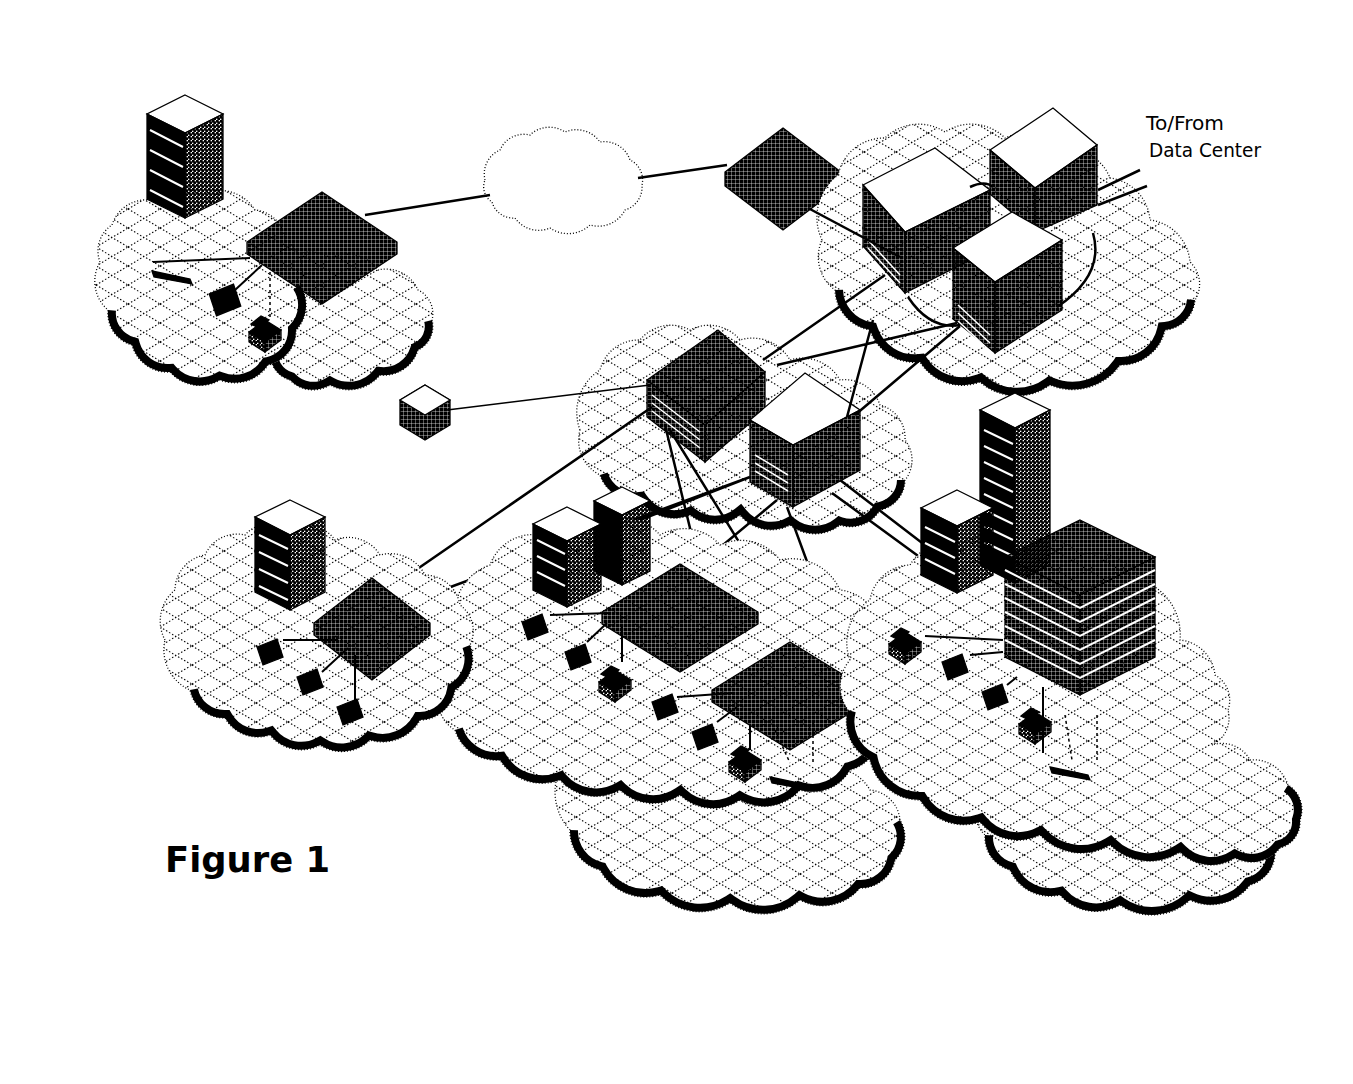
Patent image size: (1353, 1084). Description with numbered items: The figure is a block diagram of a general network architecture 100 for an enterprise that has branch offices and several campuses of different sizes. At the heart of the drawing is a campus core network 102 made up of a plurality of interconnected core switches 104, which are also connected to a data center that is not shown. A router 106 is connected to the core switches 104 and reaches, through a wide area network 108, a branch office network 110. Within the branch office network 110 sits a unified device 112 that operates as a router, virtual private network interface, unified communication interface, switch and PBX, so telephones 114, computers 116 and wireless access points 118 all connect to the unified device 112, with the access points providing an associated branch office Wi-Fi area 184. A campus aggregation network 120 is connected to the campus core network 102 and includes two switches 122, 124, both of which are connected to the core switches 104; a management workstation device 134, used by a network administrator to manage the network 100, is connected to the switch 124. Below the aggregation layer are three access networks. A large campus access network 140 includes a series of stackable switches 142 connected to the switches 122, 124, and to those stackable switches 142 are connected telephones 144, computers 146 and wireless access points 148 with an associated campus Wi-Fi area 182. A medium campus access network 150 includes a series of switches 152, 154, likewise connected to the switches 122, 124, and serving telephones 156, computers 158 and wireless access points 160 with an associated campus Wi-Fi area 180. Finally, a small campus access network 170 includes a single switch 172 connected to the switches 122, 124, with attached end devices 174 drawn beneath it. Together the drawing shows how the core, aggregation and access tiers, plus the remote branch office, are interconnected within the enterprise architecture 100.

The network architecture 100 is at (1238, 487).
The campus core network 102 is at (1170, 320).
The core switches 104 is at (915, 135).
The router 106 is at (768, 140).
The wide area network (WAN) 108 is at (540, 140).
The branch office network 110 is at (232, 240).
The unified device 112 is at (330, 198).
The telephones 114 is at (274, 344).
The computers 116 is at (216, 323).
The wireless access points 118 is at (160, 288).
The campus aggregation network 120 is at (905, 495).
The switch 122 is at (850, 462).
The switch 124 is at (735, 346).
The management workstation device 134 is at (337, 412).
The large campus access network 140 is at (1071, 629).
The stackable switches 142 is at (1120, 545).
The telephones 144 is at (965, 682).
The computers 146 is at (950, 697).
The wireless access points 148 is at (1069, 802).
The medium campus access network 150 is at (666, 651).
The switch 152 is at (697, 604).
The switch 154 is at (790, 696).
The telephones 156 is at (670, 736).
The computers 158 is at (602, 701).
The wireless access points 160 is at (802, 797).
The small campus access network 170 is at (195, 660).
The switch 172 is at (345, 590).
The workstation 174 is at (301, 702).
The campus Wi-Fi area 180 is at (795, 885).
The campus Wi-Fi area 182 is at (1225, 885).
The branch office Wi-Fi area 184 is at (392, 296).